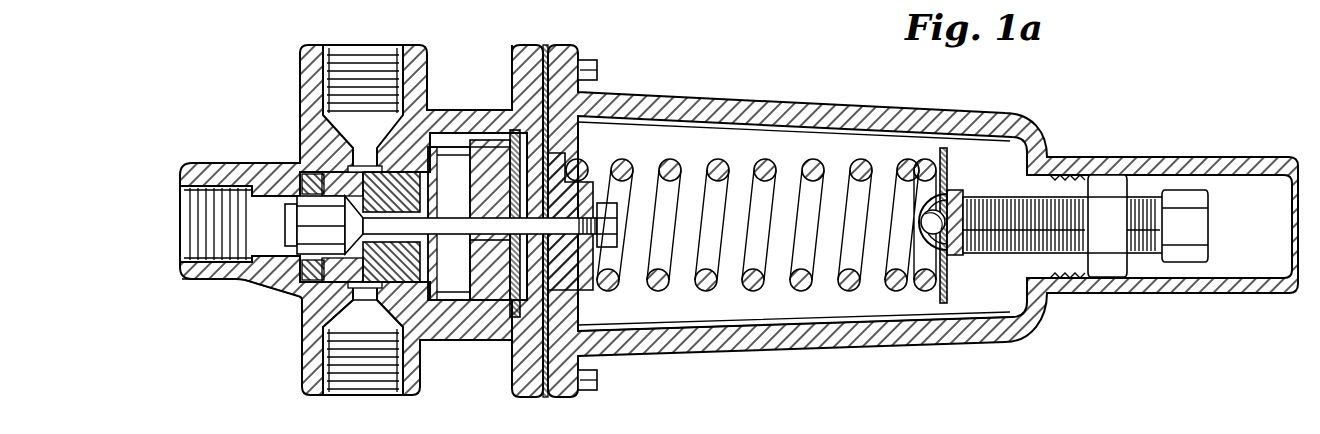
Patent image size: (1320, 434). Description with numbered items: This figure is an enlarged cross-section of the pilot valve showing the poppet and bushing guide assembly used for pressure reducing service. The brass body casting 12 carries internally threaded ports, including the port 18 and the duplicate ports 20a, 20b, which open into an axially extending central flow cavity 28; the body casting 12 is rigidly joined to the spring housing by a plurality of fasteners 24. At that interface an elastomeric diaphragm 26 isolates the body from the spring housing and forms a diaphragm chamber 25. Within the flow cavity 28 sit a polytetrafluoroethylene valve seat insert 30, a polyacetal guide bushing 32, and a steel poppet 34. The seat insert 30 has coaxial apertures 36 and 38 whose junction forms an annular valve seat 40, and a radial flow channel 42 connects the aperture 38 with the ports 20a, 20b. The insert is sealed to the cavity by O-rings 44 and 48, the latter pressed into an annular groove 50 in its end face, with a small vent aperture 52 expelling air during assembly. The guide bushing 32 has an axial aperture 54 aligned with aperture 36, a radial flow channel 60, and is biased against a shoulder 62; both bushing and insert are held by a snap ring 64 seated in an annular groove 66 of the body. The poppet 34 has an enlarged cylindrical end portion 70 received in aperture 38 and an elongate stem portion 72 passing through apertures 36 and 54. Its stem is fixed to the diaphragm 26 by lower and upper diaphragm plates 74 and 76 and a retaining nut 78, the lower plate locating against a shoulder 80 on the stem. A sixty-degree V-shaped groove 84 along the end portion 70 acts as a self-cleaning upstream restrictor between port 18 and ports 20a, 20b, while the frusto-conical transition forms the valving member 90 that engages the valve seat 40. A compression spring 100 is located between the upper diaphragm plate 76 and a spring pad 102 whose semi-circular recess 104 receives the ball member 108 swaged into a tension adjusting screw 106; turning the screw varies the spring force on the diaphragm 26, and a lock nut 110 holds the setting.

The body casting 12 is at (300, 375).
The aperture port 18 is at (185, 222).
The aperture port 20a is at (353, 68).
The aperture port 20b is at (363, 388).
The fasteners 24 is at (597, 64).
The diaphragm chamber 25 is at (530, 95).
The elastomeric diaphragm 26 is at (544, 398).
The central flow cavity 28 is at (448, 338).
The valve seat insert 30 is at (307, 310).
The guide bushing 32 is at (482, 297).
The poppet 34 is at (295, 276).
The aperture 36 is at (391, 262).
The aperture 38 is at (297, 230).
The annular valve seat 40 is at (391, 192).
The flow channel 42 is at (377, 295).
The O-ring 44 is at (428, 170).
The O-ring 48 is at (303, 292).
The annular groove 50 is at (303, 178).
The vent aperture 52 is at (346, 171).
The axial aperture 54 is at (490, 220).
The flow channel 60 is at (490, 270).
The shoulder 62 is at (448, 140).
The snap ring 64 is at (556, 313).
The annular groove 66 is at (510, 345).
The enlarged cylindrical end portion 70 is at (310, 200).
The stem portion 72 is at (449, 223).
The lower diaphragm plate 74 is at (535, 165).
The upper diaphragm plate 76 is at (582, 148).
The retaining nut 78 is at (620, 216).
The shoulder 80 is at (570, 221).
The V-shaped groove 84 is at (217, 283).
The valving member 90 is at (363, 316).
The compression spring 100 is at (722, 160).
The spring pad 102 is at (943, 170).
The semi-circular recess 104 is at (948, 184).
The tension adjusting screw 106 is at (1040, 217).
The ball member 108 is at (948, 252).
The lock nut 110 is at (1107, 267).